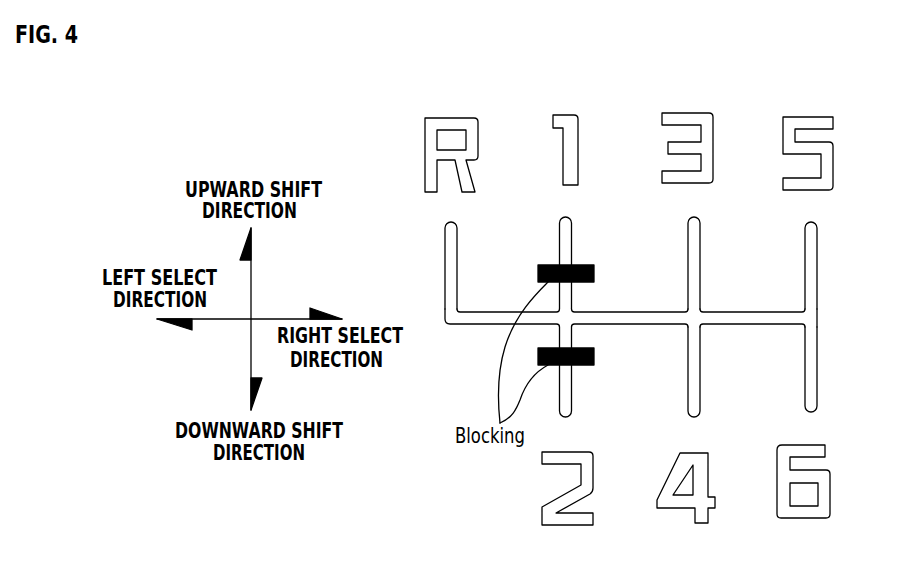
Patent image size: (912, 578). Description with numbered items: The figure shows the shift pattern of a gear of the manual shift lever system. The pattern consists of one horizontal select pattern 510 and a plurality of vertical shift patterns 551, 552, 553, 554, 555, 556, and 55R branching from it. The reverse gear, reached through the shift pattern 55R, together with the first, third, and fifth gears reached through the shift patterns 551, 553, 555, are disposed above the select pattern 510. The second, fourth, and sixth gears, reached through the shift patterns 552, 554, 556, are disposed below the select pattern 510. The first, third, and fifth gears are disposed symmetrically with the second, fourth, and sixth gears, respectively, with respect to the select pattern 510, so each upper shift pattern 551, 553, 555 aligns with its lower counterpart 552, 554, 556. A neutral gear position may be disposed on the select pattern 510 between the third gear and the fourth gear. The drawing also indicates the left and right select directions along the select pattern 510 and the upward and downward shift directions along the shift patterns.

The select pattern 510 is at (478, 324).
The shift pattern for reverse gear 55R is at (457, 250).
The shift pattern for first gear 551 is at (572, 243).
The shift pattern for second gear 552 is at (572, 379).
The shift pattern for third gear 553 is at (700, 245).
The shift pattern for fourth gear 554 is at (700, 383).
The shift pattern for fifth gear 555 is at (817, 248).
The shift pattern for sixth gear 556 is at (817, 385).